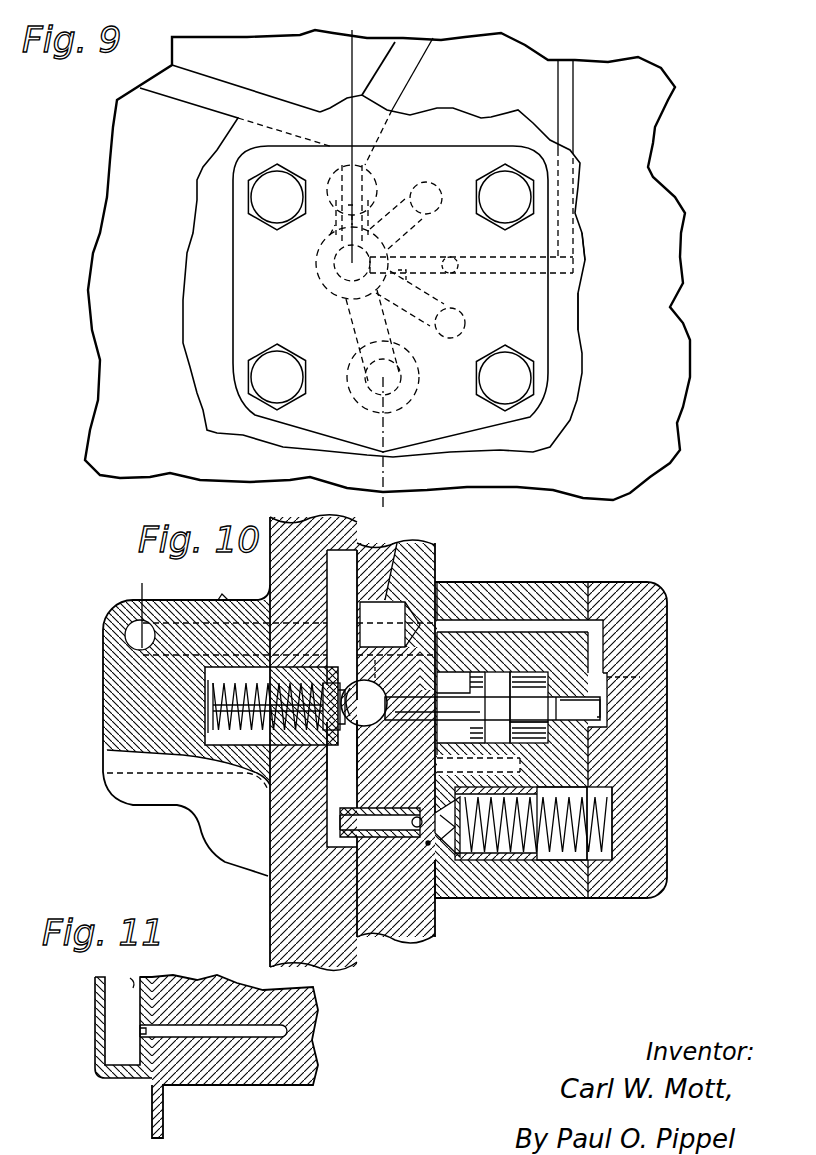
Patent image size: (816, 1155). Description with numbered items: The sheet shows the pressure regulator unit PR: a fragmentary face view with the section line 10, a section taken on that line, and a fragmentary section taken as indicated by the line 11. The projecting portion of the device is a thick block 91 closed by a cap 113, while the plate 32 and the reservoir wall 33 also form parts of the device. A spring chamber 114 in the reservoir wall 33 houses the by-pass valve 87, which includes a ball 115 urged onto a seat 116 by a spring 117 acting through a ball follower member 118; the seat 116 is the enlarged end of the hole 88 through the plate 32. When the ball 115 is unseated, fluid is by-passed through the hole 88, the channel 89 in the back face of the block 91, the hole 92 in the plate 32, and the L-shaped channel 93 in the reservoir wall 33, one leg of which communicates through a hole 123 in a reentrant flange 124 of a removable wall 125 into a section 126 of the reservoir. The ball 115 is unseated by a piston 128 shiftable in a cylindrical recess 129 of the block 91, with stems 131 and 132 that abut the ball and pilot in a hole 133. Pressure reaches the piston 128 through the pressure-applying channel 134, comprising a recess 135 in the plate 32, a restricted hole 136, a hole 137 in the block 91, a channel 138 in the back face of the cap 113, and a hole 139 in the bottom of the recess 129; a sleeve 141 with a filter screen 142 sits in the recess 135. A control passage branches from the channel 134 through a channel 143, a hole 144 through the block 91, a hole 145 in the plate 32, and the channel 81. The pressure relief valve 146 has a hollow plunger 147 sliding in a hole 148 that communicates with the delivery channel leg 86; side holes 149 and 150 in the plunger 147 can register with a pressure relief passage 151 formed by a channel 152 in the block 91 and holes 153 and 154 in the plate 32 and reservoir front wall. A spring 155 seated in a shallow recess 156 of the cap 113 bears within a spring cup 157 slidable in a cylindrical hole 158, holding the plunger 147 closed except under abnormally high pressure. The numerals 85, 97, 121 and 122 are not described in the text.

In FIG. 9, the section line 10— 10 is at (380, 30).
In FIG. 10, the section line 11 is at (150, 583).
In FIG. 10, the plate 32 is at (395, 938).
In FIG. 10, the reservoir wall 33 is at (280, 915).
In FIG. 11, the reservoir wall 33 is at (281, 1082).
In FIG. 9, the channel 81 is at (573, 107).
In FIG. 9, the plunger rod 85 is at (245, 101).
In FIG. 10, the plunger rod 85 is at (352, 585).
In FIG. 9, the fluid delivery channel leg 86 is at (338, 207).
In FIG. 10, the fluid delivery channel leg 86 is at (222, 601).
In FIG. 9, the by-pass valve 87 is at (326, 269).
In FIG. 10, the by-pass valve 87 is at (345, 738).
In FIG. 10, the hole 88 is at (461, 707).
In FIG. 9, the channel 89 is at (408, 243).
In FIG. 10, the channel 89 is at (458, 683).
In FIG. 9, the block 91 is at (540, 325).
In FIG. 10, the block 91 is at (538, 862).
In FIG. 10, the hole 92 is at (377, 668).
In FIG. 10, the L-shaped channel 93 is at (150, 628).
In FIG. 11, the L-shaped channel 93 is at (220, 1038).
In FIG. 9, the parting line 97 is at (402, 70).
In FIG. 10, the cap 113 is at (655, 746).
In FIG. 10, the spring chamber 114 is at (271, 714).
In FIG. 10, the ball 115 is at (364, 703).
In FIG. 10, the seat 116 is at (333, 683).
In FIG. 10, the spring 117 is at (258, 683).
In FIG. 10, the ball follower member 118 is at (342, 732).
In FIG. 9, the port 121 is at (456, 188).
In FIG. 9, the port 122 is at (433, 188).
In FIG. 11, the hole 123 is at (140, 1034).
In FIG. 11, the reentrant flange 124 is at (131, 978).
In FIG. 11, the removable wall 125 is at (140, 1033).
In FIG. 11, the section of the reservoir 126 is at (112, 1009).
In FIG. 10, the piston 128 is at (498, 707).
In FIG. 10, the cylindrical recess 129 is at (509, 732).
In FIG. 10, the stem 131 is at (492, 708).
In FIG. 10, the stem 132 is at (509, 697).
In FIG. 10, the hole 133 is at (557, 695).
In FIG. 10, the pressure-applying channel 134 is at (516, 625).
In FIG. 9, the recess 135 is at (375, 181).
In FIG. 10, the recess 135 is at (437, 560).
In FIG. 9, the hole 136 is at (370, 182).
In FIG. 10, the hole 136 is at (437, 570).
In FIG. 9, the hole 137 is at (374, 168).
In FIG. 10, the hole 137 is at (487, 623).
In FIG. 9, the channel 138 is at (331, 211).
In FIG. 10, the channel 138 is at (598, 661).
In FIG. 10, the hole 139 is at (640, 677).
In FIG. 10, the sleeve 141 is at (388, 597).
In FIG. 10, the filter screen 142 is at (390, 624).
In FIG. 9, the channel 143 is at (400, 278).
In FIG. 10, the channel 143 is at (605, 712).
In FIG. 9, the hole 144 is at (482, 279).
In FIG. 9, the hole 145 is at (453, 274).
In FIG. 10, the pressure relief valve 146 is at (437, 838).
In FIG. 10, the plunger 147 is at (340, 831).
In FIG. 10, the hole 148 is at (366, 810).
In FIG. 10, the hole 149 is at (417, 816).
In FIG. 10, the hole 150 is at (427, 845).
In FIG. 10, the pressure relief passage 151 is at (472, 776).
In FIG. 10, the channel 152 is at (470, 762).
In FIG. 10, the hole 153 is at (370, 757).
In FIG. 10, the hole 154 is at (183, 790).
In FIG. 10, the spring 155 is at (597, 824).
In FIG. 10, the shallow recess 156 is at (592, 866).
In FIG. 10, the spring cup 157 is at (512, 860).
In FIG. 10, the cylindrical hole 158 is at (556, 860).
In FIG. 9, the pressure regulator unit PR is at (540, 352).
In FIG. 10, the pressure regulator unit PR is at (442, 905).